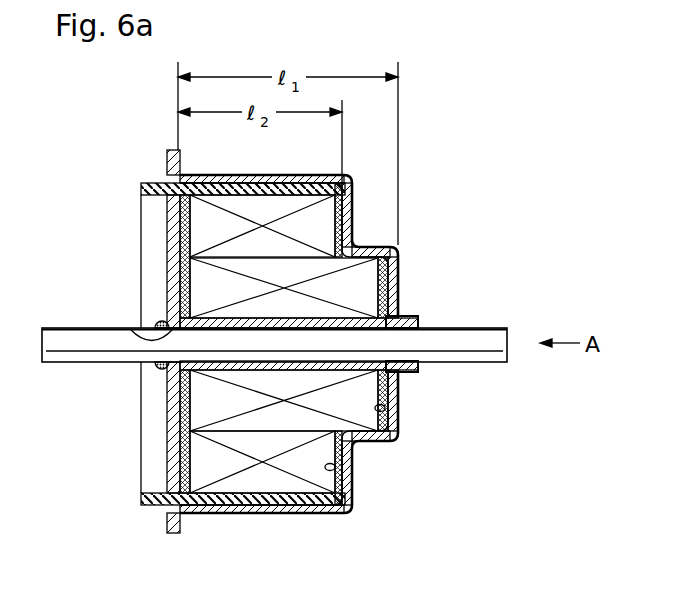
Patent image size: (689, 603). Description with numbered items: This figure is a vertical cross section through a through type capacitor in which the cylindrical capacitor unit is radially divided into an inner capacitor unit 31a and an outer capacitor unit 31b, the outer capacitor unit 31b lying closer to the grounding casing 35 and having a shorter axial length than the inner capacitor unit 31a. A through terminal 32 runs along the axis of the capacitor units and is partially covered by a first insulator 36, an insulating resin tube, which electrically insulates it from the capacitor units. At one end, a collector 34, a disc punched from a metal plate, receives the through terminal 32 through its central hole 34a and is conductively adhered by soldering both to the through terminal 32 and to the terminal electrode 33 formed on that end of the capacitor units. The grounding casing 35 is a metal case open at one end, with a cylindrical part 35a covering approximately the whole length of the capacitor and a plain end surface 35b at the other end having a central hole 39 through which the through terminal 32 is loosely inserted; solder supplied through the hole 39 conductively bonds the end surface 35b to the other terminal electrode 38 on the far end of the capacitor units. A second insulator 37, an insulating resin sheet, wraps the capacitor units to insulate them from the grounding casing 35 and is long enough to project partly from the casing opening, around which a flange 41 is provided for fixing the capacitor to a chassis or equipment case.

The inner capacitor unit 31a is at (358, 289).
The outer capacitor unit 31b is at (320, 220).
The through terminal 32 is at (496, 364).
The terminal electrode 33 is at (187, 395).
The collector 34 is at (172, 458).
The hole 34a is at (130, 329).
The grounding casing 35 is at (289, 177).
The cylindrical part 35a is at (275, 516).
The end surface 35b is at (350, 241).
The first insulator 36 is at (406, 372).
The second insulator 37 is at (141, 496).
The terminal electrode 38 is at (350, 478).
The hole 39 is at (399, 305).
The flange 41 is at (166, 520).